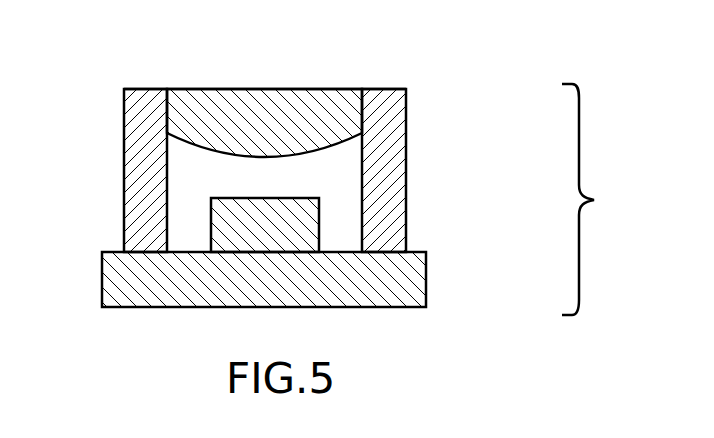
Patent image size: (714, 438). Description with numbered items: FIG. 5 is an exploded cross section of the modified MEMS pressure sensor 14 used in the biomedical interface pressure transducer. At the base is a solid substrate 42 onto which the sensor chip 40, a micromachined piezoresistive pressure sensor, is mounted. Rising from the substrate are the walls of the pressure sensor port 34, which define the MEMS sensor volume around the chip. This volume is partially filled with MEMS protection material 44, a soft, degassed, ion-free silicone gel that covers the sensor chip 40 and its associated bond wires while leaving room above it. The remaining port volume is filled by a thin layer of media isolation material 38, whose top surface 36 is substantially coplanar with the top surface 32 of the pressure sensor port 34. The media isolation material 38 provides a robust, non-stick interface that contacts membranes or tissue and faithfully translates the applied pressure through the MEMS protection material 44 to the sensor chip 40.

The modified MEMS pressure sensor 14 is at (599, 199).
The top surface of the MEMS pressure sensor port 32 is at (137, 89).
The pressure sensor port 34 is at (148, 117).
The top surface of the media isolation material 36 is at (247, 89).
The media isolation material 38 is at (228, 122).
The sensor chip 40 is at (305, 223).
The solid substrate 42 is at (402, 284).
The MEMS protection material 44 is at (186, 186).